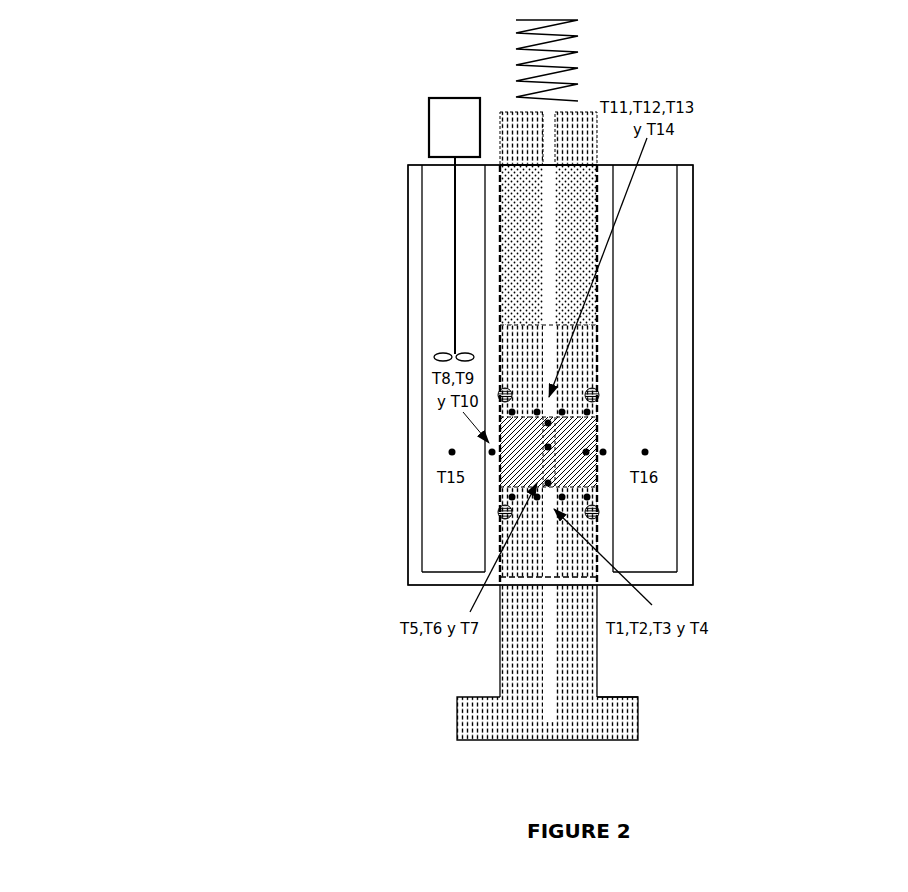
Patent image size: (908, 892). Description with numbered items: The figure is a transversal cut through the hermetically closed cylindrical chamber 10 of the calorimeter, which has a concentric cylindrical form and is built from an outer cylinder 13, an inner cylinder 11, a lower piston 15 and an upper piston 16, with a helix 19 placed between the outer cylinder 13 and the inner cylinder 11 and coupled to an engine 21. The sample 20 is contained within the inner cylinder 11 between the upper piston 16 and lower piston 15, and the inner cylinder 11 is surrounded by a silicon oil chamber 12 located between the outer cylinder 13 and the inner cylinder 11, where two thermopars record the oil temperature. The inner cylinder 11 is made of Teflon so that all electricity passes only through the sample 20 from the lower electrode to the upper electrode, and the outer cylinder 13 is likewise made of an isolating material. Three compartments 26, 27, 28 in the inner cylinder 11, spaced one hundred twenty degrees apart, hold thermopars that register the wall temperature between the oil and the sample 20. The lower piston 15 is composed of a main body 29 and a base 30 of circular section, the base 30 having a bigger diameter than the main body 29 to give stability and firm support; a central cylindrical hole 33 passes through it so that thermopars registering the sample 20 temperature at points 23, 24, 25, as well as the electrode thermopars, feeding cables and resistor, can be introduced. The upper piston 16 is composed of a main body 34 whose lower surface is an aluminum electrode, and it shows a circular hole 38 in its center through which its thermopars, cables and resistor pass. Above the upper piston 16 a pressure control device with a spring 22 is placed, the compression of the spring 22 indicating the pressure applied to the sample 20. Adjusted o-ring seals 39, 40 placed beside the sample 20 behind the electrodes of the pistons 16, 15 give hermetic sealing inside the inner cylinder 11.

The hermetically closed cylindrical chamber 10 is at (364, 334).
The inner cylinder 11 is at (601, 271).
The silicon oil chamber 12 is at (641, 309).
The outer cylinder 13 is at (676, 225).
The lower piston 15 is at (721, 706).
The upper piston 16 is at (654, 138).
The helix 19 is at (431, 354).
The sample 20 is at (588, 453).
The engine 21 is at (448, 120).
The spring 22 is at (566, 90).
The temperature measuring point 23 is at (542, 479).
The temperature measuring point 24 is at (542, 441).
The temperature measuring point 25 is at (544, 421).
The compartment 26 is at (608, 448).
The compartment 27 is at (488, 451).
The compartment 28 is at (554, 445).
The main body 29 is at (509, 663).
The base 30 is at (471, 703).
The cylindrical hole 33 is at (548, 673).
The main body 34 is at (566, 188).
The circular hole 38 is at (546, 243).
The o-ring seal 39 is at (604, 393).
The o-ring seal 40 is at (591, 512).